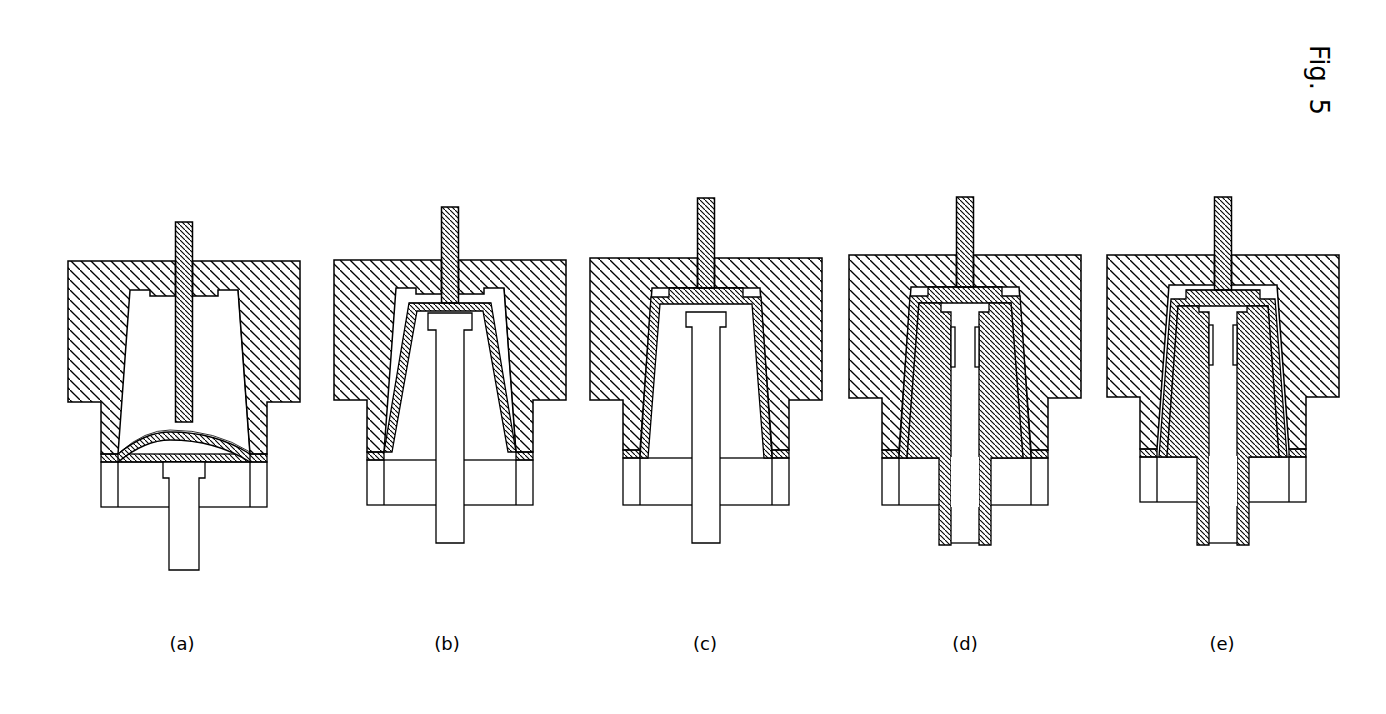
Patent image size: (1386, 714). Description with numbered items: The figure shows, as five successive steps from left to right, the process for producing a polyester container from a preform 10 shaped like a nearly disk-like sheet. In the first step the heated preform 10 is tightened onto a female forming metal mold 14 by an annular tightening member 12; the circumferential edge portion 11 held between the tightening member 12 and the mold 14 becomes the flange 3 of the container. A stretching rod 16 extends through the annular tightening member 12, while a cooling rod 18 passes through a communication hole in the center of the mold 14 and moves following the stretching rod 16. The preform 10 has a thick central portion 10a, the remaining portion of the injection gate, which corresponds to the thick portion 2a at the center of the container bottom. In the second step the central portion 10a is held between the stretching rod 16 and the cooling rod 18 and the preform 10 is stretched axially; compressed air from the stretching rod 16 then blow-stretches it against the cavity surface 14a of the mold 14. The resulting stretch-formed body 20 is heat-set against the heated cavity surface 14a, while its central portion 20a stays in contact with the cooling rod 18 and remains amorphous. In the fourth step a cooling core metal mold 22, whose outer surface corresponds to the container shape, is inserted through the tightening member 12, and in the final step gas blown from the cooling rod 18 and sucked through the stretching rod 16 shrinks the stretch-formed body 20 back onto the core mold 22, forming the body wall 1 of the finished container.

The body wall 1 is at (1279, 354).
The thick portion 2a is at (1210, 298).
The flange 3 is at (1302, 454).
The preform 10 is at (148, 450).
The central portion 10a is at (172, 426).
The circumferential edge portion 11 is at (268, 456).
The annular tightening member 12 is at (262, 495).
The forming metal mold 14 is at (97, 264).
The cavity surface 14a is at (238, 325).
The stretching rod 16 is at (190, 547).
The cooling rod 18 is at (192, 240).
The stretch-formed body 20 is at (770, 320).
The central portion 20a is at (690, 290).
The cooling core metal mold 22 is at (930, 448).